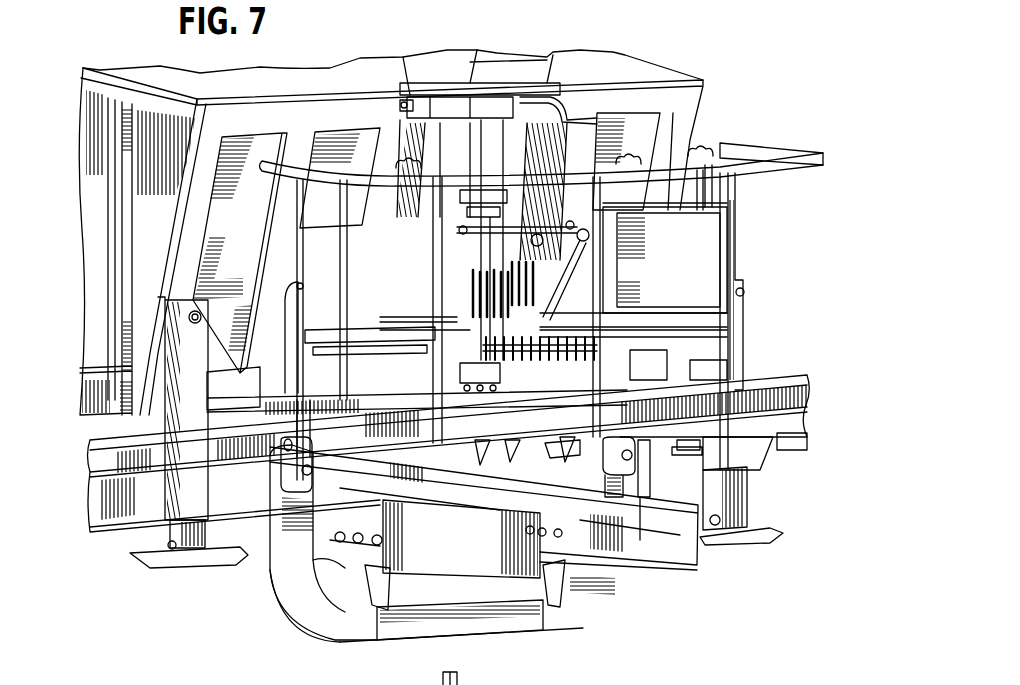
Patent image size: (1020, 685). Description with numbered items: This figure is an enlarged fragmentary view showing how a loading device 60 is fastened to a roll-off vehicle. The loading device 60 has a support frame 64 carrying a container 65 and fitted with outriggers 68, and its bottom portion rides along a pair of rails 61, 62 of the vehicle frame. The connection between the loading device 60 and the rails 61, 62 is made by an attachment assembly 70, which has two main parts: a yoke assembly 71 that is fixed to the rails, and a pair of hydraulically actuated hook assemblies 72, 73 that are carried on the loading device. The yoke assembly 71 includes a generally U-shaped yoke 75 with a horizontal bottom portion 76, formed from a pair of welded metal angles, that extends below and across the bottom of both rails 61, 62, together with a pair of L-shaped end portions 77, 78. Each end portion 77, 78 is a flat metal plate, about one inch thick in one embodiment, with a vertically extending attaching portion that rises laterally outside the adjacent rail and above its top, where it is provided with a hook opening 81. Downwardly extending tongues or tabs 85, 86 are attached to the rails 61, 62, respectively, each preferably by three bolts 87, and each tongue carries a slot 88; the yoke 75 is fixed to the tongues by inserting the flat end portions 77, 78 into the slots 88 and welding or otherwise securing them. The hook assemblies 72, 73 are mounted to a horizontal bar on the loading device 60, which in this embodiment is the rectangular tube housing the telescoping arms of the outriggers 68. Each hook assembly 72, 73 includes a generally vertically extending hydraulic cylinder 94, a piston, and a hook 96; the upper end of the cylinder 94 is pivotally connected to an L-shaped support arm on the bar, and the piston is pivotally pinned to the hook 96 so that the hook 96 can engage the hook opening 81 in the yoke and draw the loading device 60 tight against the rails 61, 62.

The loading device 60 is at (668, 63).
The rail 61 is at (97, 487).
The rail 62 is at (648, 462).
The support frame 64 is at (558, 467).
The container 65 is at (97, 294).
The outriggers 68 is at (170, 503).
The attachment assembly 70 is at (280, 622).
The yoke assembly 71 is at (364, 645).
The hook assembly 72 is at (315, 433).
The hook assembly 73 is at (710, 508).
The U-shaped yoke 75 is at (627, 580).
The horizontal bottom portion 76 is at (512, 622).
The L-shaped end portion 77 is at (337, 627).
The L-shaped end portion 78 is at (690, 590).
The hook opening 81 is at (340, 538).
The tongue 85 is at (390, 573).
The tongue 86 is at (547, 600).
The bolts 87 is at (330, 552).
The slot 88 is at (330, 577).
The hydraulic cylinder 94 is at (343, 333).
The hook 96 is at (318, 470).